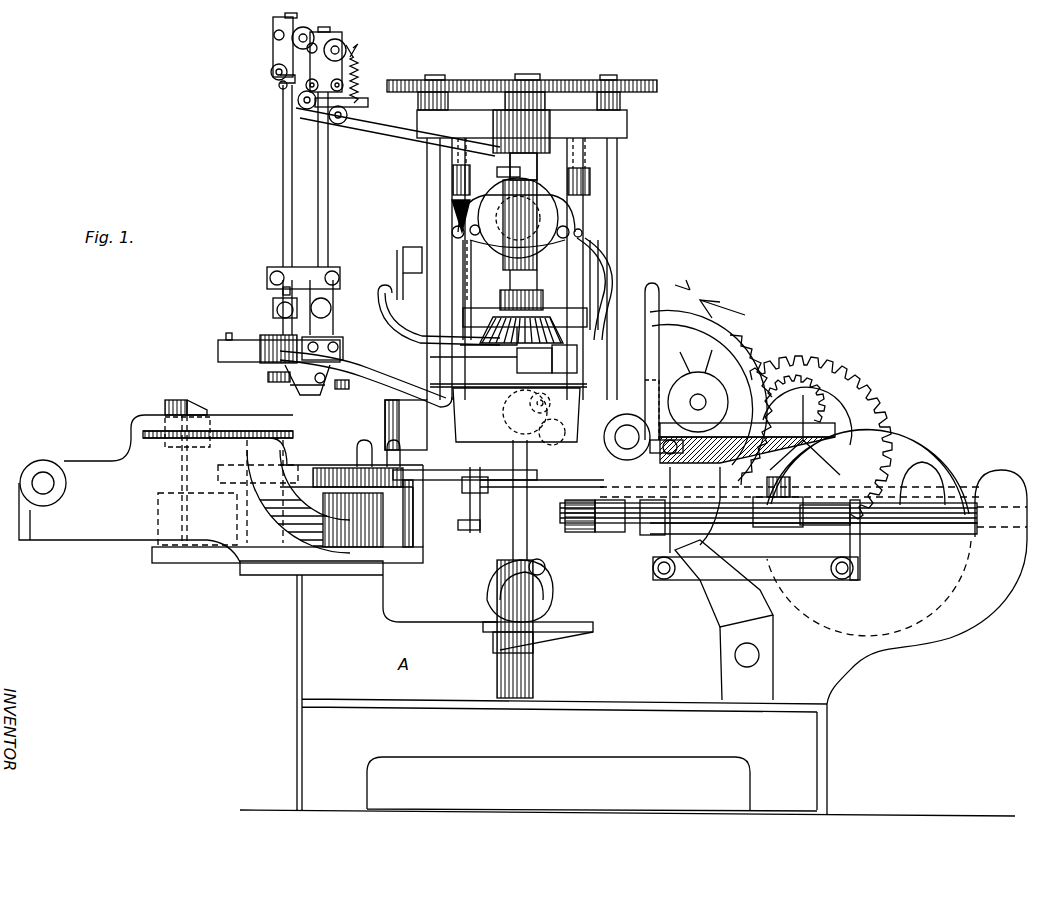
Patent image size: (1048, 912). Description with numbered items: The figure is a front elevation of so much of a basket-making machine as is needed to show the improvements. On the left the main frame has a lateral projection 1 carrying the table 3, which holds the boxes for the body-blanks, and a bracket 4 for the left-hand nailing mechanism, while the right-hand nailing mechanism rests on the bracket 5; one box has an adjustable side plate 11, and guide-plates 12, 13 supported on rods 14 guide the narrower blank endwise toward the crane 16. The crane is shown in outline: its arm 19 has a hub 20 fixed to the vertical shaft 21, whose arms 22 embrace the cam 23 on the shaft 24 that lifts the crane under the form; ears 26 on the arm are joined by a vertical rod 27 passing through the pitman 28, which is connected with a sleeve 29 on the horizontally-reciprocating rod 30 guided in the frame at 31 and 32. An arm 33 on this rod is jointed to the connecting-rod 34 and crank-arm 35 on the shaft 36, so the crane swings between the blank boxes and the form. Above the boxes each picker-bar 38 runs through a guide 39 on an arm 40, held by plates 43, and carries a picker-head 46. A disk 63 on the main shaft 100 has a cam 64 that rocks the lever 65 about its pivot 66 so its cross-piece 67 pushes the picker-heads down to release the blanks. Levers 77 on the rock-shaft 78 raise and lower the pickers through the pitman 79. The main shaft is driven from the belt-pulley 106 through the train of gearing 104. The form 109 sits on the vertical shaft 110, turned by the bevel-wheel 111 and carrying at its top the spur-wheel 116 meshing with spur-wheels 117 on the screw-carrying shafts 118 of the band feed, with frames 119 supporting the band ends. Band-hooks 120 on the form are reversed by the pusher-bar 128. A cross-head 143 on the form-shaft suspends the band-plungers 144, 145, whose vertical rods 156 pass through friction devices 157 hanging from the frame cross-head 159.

The lateral projection 1 is at (322, 568).
The table 3 is at (194, 563).
The bracket 4 is at (184, 488).
The bracket 5 is at (735, 425).
The adjustable side plate 11 is at (351, 506).
The guide-plate 12 is at (165, 397).
The guide-plate 13 is at (427, 438).
The rods 14 is at (413, 512).
The crane 16 is at (438, 470).
The arm 19 is at (458, 500).
The hub 20 is at (535, 492).
The vertical shaft 21 is at (513, 452).
The arms 22 is at (578, 622).
The cam 23 is at (488, 590).
The shaft 24 is at (528, 567).
The ears 26 is at (466, 530).
The vertical rod 27 is at (470, 495).
The pitman 28 is at (650, 505).
The sleeve 29 is at (782, 527).
The horizontally-reciprocating rod 30 is at (935, 525).
The guide 31 is at (698, 510).
The guide 32 is at (1007, 517).
The arm 33 is at (860, 545).
The connecting-rod 34 is at (805, 578).
The crank-arm 35 is at (680, 575).
The shaft 36 is at (705, 590).
The picker-bar 38 is at (282, 175).
The guide 39 is at (274, 292).
The arm 40 is at (250, 343).
The plates 43 is at (340, 274).
The picker-head 46 is at (338, 386).
The disk 63 is at (622, 503).
The cam 64 is at (595, 503).
The lever 65 is at (375, 385).
The pivot 66 is at (530, 405).
The cross-piece 67 is at (308, 398).
The lever 77 is at (398, 100).
The rock-shaft 78 is at (545, 193).
The pitman 79 is at (455, 210).
The main shaft 100 is at (622, 442).
The train of gearing 104 is at (830, 437).
The belt-pulley 106 is at (945, 470).
The form 109 is at (516, 415).
The vertical shaft 110 is at (545, 163).
The bevel-wheel 111 is at (508, 338).
The spur-wheel 116 is at (566, 69).
The spur-wheels 117 is at (472, 80).
The screw-carrying shafts 118 is at (428, 192).
The frames 119 is at (404, 295).
The band-hooks 120 is at (380, 330).
The pusher-bar 128 is at (665, 345).
The cross-head 143 is at (518, 224).
The band-plungers 144 is at (462, 252).
The band-plungers 145 is at (610, 262).
The vertical rod 156 is at (452, 212).
The friction devices 157 is at (455, 178).
The cross-head 159 is at (522, 115).